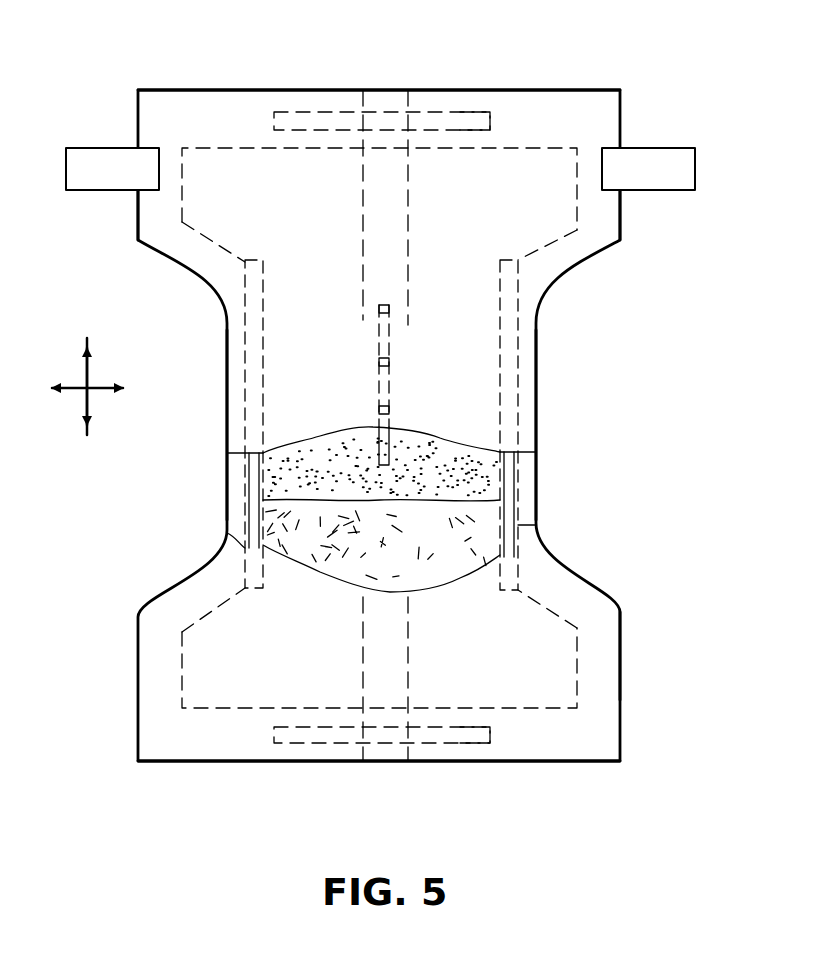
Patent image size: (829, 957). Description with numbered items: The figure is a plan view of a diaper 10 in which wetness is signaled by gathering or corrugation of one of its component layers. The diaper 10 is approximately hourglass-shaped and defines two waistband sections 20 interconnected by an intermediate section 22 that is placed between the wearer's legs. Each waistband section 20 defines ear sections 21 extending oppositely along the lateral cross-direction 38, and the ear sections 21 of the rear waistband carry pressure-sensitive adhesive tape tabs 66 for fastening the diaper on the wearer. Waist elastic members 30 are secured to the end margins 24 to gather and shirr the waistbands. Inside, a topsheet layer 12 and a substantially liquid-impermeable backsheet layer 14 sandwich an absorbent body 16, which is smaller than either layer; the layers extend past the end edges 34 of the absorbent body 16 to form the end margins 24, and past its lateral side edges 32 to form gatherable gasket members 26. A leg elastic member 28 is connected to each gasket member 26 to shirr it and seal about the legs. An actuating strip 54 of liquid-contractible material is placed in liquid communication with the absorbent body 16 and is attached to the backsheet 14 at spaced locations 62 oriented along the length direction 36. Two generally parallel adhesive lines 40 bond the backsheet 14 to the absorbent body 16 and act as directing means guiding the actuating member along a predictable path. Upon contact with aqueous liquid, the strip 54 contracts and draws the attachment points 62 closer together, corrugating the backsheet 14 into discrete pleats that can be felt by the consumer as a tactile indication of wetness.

The diaper 10 is at (603, 52).
The topsheet layer 12 is at (525, 480).
The backsheet layer 14 is at (225, 276).
The absorbent body 16 is at (455, 516).
The waistband sections 20 is at (218, 88).
The ear sections 21 is at (150, 217).
The intermediate section 22 is at (542, 344).
The end margins 24 is at (310, 103).
The gatherable gasket member 26 is at (236, 414).
The leg elastic member 28 is at (250, 497).
The waist elastic members 30 is at (462, 112).
The lateral side edges 32 is at (263, 478).
The end edges 34 is at (528, 150).
The length direction 36 is at (92, 402).
The lateral cross-direction 38 is at (100, 385).
The adhesive lines 40 is at (362, 288).
The actuating strip 54 is at (393, 445).
The spaced locations 62 is at (392, 410).
The pressure-sensitive adhesive tape tabs 66 is at (98, 147).